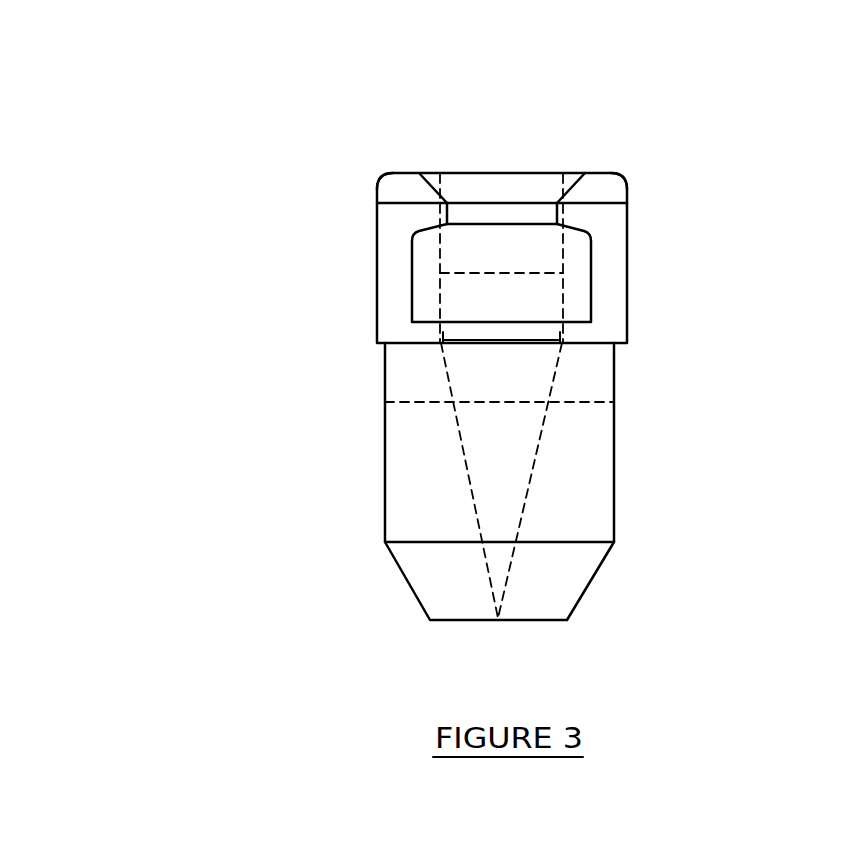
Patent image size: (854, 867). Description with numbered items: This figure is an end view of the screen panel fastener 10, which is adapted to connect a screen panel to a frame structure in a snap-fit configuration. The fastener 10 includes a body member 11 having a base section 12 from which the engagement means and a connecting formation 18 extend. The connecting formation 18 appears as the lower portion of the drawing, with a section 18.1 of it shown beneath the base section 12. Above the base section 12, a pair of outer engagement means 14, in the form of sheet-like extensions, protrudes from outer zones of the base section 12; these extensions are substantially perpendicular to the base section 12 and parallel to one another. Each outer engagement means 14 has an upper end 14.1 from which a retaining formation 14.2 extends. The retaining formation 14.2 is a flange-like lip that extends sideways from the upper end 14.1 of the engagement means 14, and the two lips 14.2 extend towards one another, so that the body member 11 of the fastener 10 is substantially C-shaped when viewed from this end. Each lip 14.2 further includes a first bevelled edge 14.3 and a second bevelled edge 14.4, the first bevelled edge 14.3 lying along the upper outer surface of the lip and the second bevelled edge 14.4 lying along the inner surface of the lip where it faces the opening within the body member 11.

The screen panel fastener 10 is at (184, 84).
The body member 11 is at (290, 335).
The base section 12 is at (537, 331).
The outer engagement means 14 is at (387, 323).
The upper end 14.1 is at (390, 190).
The retaining formation 14.2 is at (427, 213).
The first bevelled edge 14.3 is at (437, 192).
The second bevelled edge 14.4 is at (423, 232).
The connecting formation 18 is at (285, 599).
The body section 18.1 is at (587, 498).